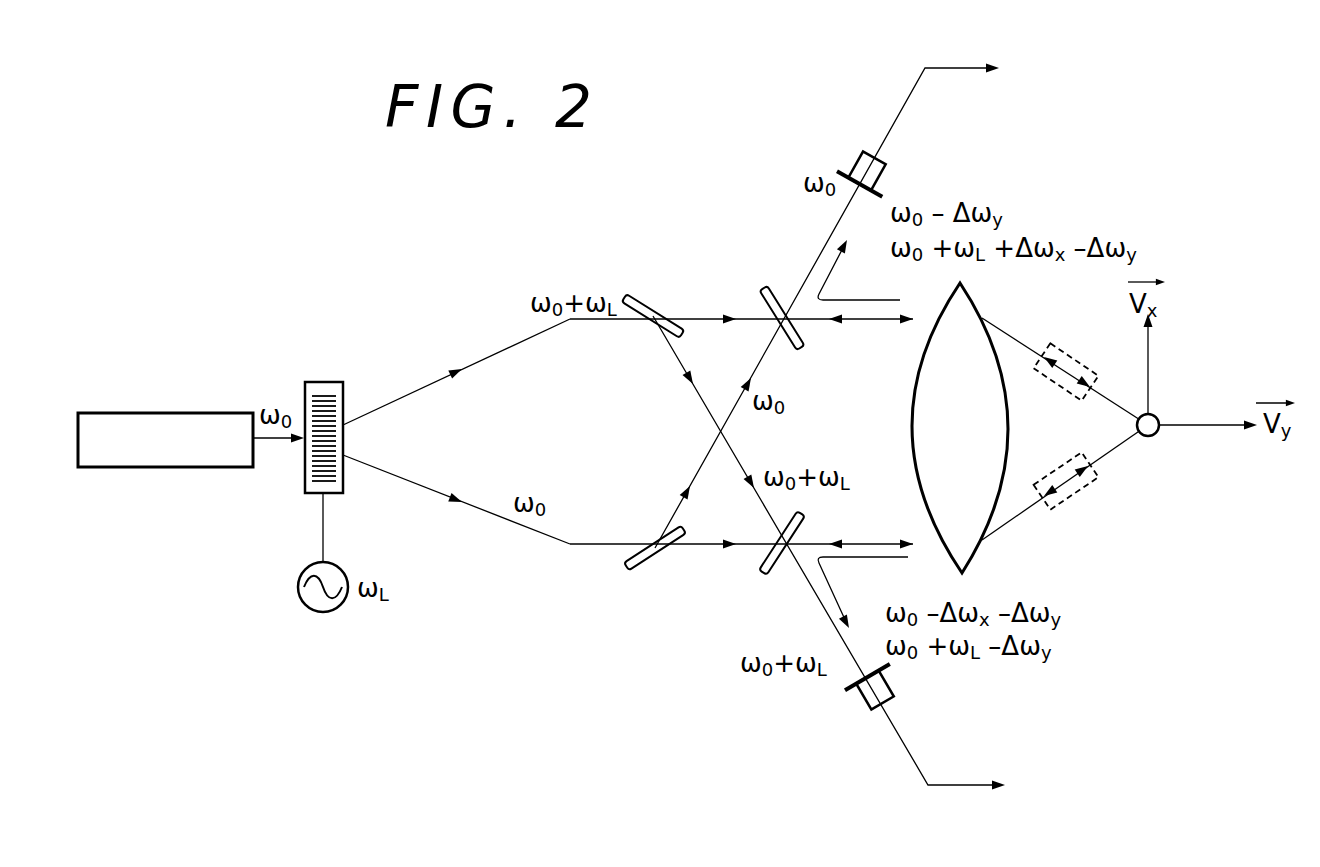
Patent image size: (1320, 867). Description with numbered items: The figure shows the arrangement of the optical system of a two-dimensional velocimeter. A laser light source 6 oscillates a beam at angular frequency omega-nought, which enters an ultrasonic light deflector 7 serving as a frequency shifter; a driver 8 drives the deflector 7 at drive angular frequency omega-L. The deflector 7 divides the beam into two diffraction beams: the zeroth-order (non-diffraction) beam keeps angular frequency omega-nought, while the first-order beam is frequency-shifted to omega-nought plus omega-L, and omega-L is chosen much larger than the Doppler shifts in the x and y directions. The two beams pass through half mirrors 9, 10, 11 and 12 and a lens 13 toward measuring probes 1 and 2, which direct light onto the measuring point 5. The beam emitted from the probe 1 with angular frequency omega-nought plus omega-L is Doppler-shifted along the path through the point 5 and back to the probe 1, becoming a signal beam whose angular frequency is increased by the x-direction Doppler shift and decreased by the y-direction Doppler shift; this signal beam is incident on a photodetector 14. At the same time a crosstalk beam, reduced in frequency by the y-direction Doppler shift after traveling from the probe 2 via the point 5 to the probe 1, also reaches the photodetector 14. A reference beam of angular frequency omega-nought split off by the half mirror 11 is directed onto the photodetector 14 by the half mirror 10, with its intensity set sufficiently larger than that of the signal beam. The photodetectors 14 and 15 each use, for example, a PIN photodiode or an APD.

The measuring probe 1 is at (1075, 350).
The measuring probe 2 is at (1082, 497).
The measuring point 5 is at (1157, 438).
The laser light source 6 is at (172, 413).
The ultrasonic light deflector 7 is at (325, 382).
The driver 8 is at (316, 612).
The half mirror 9 is at (636, 298).
The half mirror 10 is at (768, 290).
The half mirror 11 is at (634, 568).
The half mirror 12 is at (770, 573).
The lens 13 is at (913, 387).
The photodetector 14 is at (856, 158).
The photodetector 15 is at (858, 706).